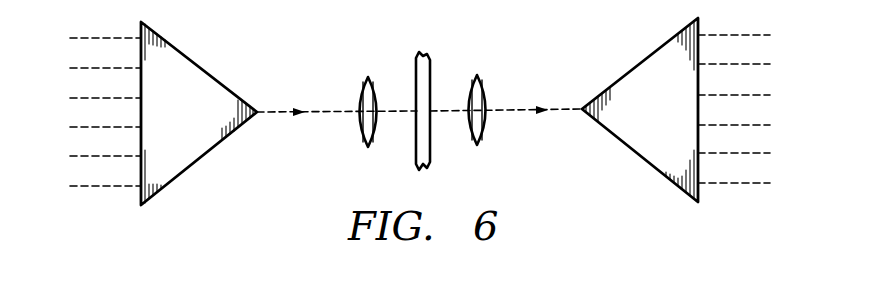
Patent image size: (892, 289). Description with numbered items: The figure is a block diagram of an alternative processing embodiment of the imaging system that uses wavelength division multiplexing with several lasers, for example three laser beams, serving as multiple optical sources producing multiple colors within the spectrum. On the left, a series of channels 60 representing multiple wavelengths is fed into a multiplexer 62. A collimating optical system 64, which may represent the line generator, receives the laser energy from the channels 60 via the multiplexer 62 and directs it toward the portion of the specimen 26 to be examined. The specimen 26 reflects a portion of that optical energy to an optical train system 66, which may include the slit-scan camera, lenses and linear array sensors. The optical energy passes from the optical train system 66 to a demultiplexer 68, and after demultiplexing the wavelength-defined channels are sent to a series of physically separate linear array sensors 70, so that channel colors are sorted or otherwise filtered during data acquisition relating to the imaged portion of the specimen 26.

The specimen 26 is at (430, 140).
The channels 60 is at (93, 187).
The multiplexer 62 is at (193, 62).
The collimating optical system 64 is at (355, 127).
The optical train system 66 is at (488, 127).
The demultiplexer 68 is at (642, 60).
The linear array sensors 70 is at (742, 185).